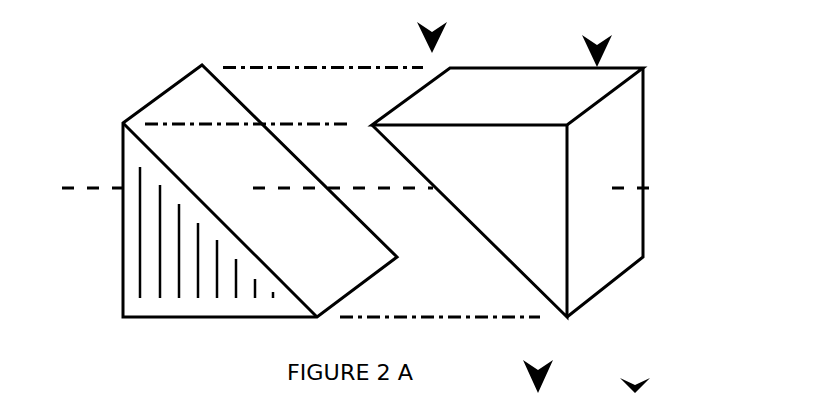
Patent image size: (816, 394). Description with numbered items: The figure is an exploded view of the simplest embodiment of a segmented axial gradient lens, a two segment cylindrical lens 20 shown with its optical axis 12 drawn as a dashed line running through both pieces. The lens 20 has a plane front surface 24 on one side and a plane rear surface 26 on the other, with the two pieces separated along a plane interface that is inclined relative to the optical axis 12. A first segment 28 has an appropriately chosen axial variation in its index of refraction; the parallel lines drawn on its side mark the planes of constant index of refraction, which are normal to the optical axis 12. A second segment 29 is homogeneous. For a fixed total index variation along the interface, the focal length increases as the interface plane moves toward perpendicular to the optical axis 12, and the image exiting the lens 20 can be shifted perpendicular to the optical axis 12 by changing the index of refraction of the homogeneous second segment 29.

The optical axis 12 is at (668, 192).
The two segment cylindrical lens 20 is at (432, 30).
The plane front surface 24 is at (123, 277).
The plane rear surface 26 is at (608, 240).
The first segment 28 is at (145, 332).
The second segment 29 is at (597, 45).